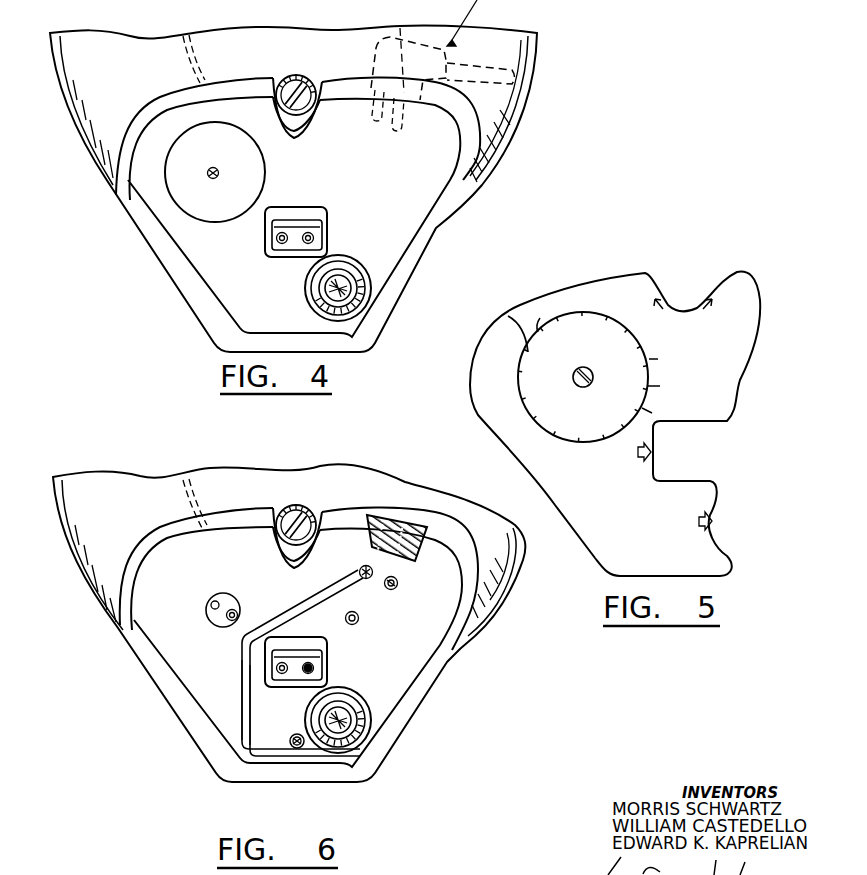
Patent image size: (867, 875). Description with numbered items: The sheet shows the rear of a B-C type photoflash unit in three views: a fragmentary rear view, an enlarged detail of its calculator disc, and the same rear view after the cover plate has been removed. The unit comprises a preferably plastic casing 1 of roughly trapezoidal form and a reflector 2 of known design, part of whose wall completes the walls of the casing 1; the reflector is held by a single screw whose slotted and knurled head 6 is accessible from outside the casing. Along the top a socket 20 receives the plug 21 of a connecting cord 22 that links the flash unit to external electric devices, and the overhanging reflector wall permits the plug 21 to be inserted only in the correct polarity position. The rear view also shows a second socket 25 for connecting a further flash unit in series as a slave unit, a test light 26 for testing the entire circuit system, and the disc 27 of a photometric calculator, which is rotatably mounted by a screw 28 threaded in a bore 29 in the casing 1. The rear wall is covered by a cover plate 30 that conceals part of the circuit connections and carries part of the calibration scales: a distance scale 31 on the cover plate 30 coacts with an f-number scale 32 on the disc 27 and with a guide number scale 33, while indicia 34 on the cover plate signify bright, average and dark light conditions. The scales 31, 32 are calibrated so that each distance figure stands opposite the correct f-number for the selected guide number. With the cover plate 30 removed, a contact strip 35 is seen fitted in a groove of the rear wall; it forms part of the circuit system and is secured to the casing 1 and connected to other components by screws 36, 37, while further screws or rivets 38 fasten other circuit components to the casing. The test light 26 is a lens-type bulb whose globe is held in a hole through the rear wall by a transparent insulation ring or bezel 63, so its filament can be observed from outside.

In FIG. 4, the casing 1 is at (453, 215).
In FIG. 6, the casing 1 is at (447, 661).
In FIG. 4, the reflector 2 is at (500, 110).
In FIG. 6, the reflector 2 is at (501, 560).
In FIG. 4, the head 6 is at (281, 87).
In FIG. 6, the head 6 is at (288, 515).
In FIG. 6, the socket 20 is at (400, 527).
In FIG. 4, the plug 21 is at (421, 60).
In FIG. 4, the connecting cord 22 is at (468, 77).
In FIG. 4, the second socket 25 is at (322, 231).
In FIG. 6, the second socket 25 is at (305, 663).
In FIG. 4, the test light 26 is at (330, 290).
In FIG. 6, the test light 26 is at (350, 720).
In FIG. 4, the disc 27 is at (172, 218).
In FIG. 5, the disc 27 is at (594, 316).
In FIG. 4, the screw 28 is at (219, 169).
In FIG. 6, the bore 29 is at (212, 603).
In FIG. 4, the cover plate 30 is at (207, 273).
In FIG. 5, the cover plate 30 is at (628, 288).
In FIG. 6, the cover plate 30 is at (299, 637).
In FIG. 5, the distance scale 31 is at (535, 318).
In FIG. 5, the f-number scale 32 is at (517, 330).
In FIG. 5, the guide number scale 33 is at (589, 443).
In FIG. 5, the indicia 34 is at (666, 378).
In FIG. 6, the contact strip 35 is at (250, 665).
In FIG. 6, the screw 36 is at (294, 748).
In FIG. 6, the screw 37 is at (363, 571).
In FIG. 6, the screws or rivets 38 is at (238, 612).
In FIG. 4, the ring 63 is at (352, 267).
In FIG. 6, the ring 63 is at (350, 698).